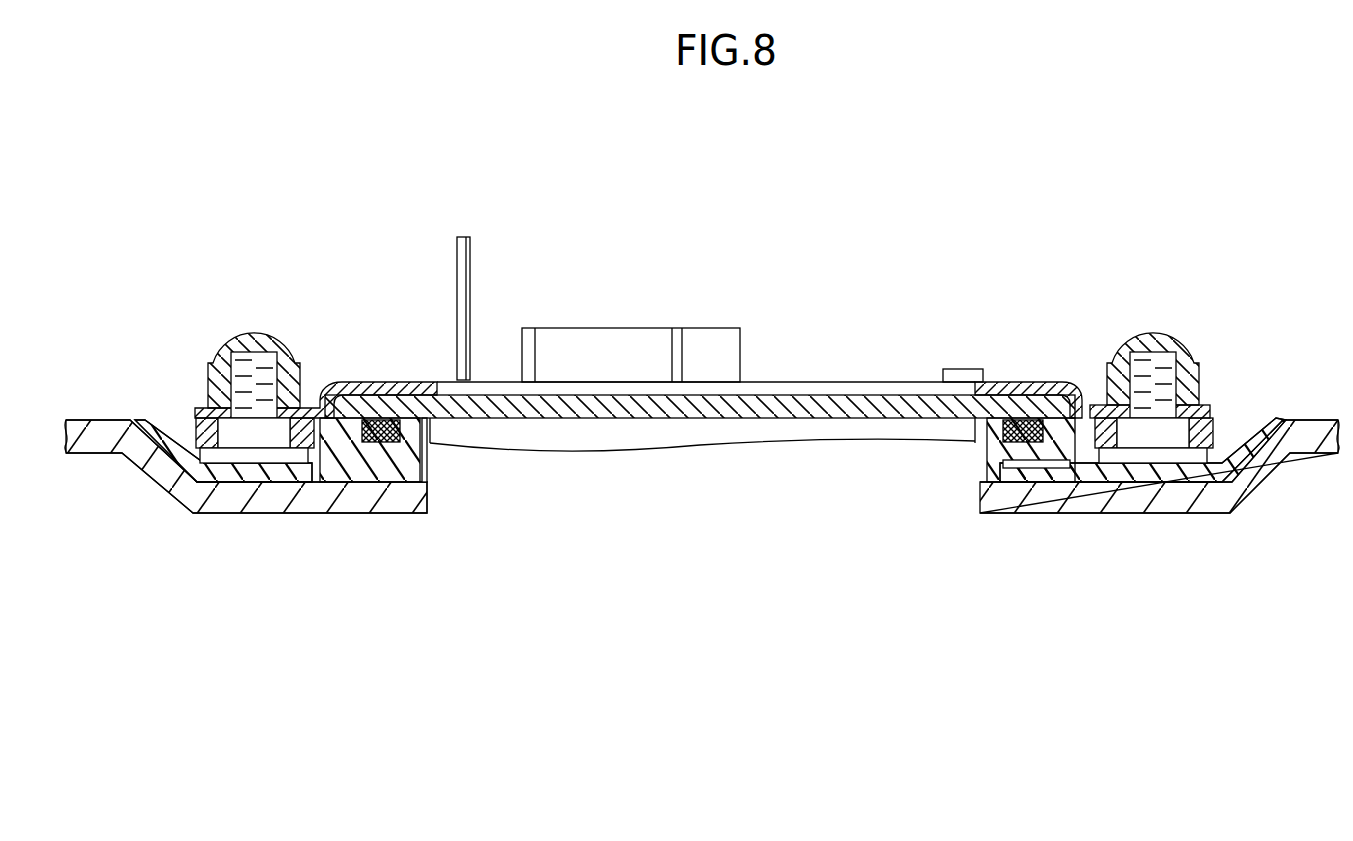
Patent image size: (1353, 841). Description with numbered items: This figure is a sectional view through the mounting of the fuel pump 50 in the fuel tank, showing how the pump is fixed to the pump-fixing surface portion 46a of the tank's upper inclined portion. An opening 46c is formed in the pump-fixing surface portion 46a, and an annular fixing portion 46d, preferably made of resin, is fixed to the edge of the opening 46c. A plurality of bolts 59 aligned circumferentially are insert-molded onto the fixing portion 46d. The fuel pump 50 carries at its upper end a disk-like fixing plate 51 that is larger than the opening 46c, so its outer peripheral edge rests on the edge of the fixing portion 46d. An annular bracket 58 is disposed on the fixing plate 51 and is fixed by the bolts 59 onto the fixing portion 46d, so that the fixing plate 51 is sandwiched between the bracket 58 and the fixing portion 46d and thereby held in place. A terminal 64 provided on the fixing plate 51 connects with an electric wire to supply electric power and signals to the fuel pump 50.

The pump-fixing surface portion 46a is at (1118, 514).
The opening 46c is at (980, 498).
The fixing portion 46d is at (1075, 398).
The fuel pump 50 is at (707, 446).
The fixing plate 51 is at (802, 400).
The bracket 58 is at (1020, 385).
The bolts 59 is at (256, 365).
The terminal 64 is at (613, 350).